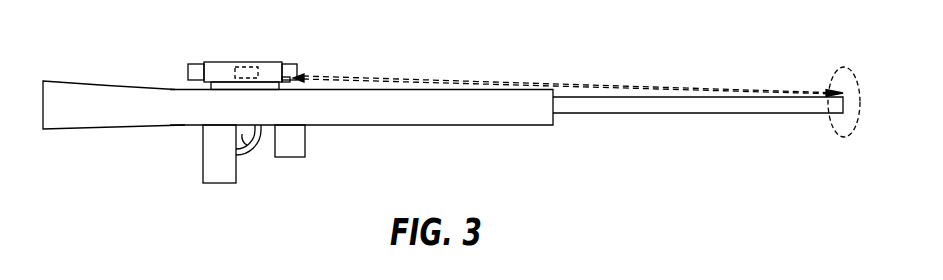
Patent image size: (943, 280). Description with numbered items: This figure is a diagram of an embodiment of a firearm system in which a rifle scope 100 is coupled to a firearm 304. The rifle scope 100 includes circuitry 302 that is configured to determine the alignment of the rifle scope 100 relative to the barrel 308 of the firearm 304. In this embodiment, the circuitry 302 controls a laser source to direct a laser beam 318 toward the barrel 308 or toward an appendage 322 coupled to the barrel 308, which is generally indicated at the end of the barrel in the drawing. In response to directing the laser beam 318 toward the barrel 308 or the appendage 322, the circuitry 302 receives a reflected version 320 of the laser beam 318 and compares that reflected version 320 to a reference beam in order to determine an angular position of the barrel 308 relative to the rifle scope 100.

The rifle scope 100 is at (223, 62).
The circuitry 302 is at (248, 65).
The firearm 304 is at (135, 88).
The barrel 308 is at (750, 113).
The laser beam 318 is at (575, 87).
The reflected version of laser beam 320 is at (428, 82).
The appendage 322 is at (832, 68).